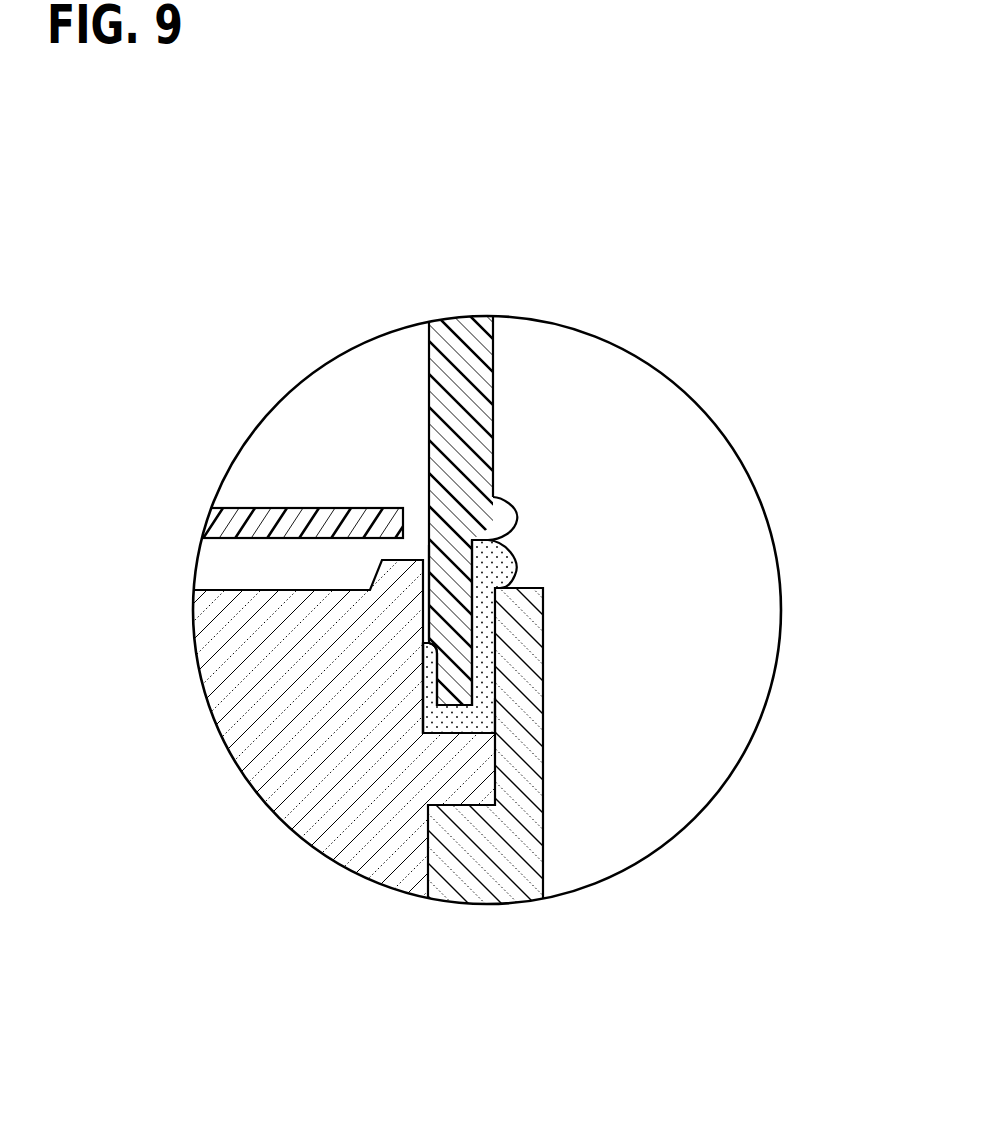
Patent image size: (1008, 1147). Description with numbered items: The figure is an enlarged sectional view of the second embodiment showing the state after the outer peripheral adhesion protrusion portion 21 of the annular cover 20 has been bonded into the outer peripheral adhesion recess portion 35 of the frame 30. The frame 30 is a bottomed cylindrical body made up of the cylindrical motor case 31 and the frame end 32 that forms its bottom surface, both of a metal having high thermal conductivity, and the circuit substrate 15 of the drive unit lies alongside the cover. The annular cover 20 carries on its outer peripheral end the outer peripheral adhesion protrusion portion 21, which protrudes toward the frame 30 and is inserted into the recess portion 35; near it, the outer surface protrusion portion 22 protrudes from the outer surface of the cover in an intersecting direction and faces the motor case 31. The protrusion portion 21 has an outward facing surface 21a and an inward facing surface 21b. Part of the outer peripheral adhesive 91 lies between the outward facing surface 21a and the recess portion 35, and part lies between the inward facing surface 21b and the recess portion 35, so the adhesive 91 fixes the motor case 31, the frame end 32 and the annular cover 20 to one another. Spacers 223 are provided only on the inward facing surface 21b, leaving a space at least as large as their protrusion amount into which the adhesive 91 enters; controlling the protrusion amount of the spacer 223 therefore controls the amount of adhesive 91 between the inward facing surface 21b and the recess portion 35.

The circuit substrate 15 is at (223, 523).
The annular cover 20 is at (470, 319).
The outer peripheral adhesion protrusion portion 21 is at (649, 636).
The outward facing surface 21a is at (505, 578).
The inward facing surface 21b is at (425, 650).
The outer surface protrusion portion 22 is at (497, 520).
The spacer 223 is at (432, 607).
The frame 30 is at (420, 748).
The motor case 31 is at (527, 883).
The frame end 32 is at (228, 673).
The outer peripheral adhesion recess portion 35 is at (446, 731).
The outer peripheral adhesive 91 is at (487, 698).